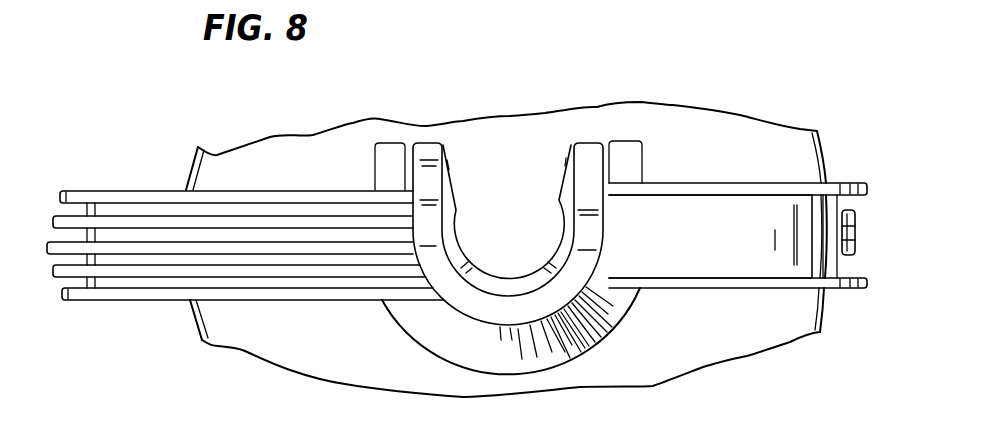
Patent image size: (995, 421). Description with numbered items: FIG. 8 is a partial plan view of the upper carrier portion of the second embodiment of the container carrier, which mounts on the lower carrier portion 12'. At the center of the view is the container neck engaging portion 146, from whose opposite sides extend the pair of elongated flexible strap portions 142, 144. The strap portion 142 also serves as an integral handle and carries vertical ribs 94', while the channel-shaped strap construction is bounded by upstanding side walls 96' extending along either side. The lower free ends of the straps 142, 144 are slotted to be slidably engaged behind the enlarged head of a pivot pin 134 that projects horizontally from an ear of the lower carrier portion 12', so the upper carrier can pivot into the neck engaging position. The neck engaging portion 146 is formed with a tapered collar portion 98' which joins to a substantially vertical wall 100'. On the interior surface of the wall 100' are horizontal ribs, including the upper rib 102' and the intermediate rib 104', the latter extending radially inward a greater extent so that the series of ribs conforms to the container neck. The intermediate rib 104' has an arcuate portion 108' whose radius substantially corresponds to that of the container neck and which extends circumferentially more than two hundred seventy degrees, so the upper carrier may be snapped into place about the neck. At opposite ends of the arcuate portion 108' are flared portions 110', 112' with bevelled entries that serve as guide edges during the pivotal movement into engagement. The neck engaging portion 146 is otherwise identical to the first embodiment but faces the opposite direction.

The lower carrier portion 12' is at (487, 249).
The vertical ribs 94' is at (231, 264).
The upstanding side walls 96' is at (738, 239).
The tapered collar portion 98' is at (526, 331).
The vertical wall 100' is at (529, 323).
The upper rib 102' is at (533, 217).
The intermediate rib 104' is at (507, 212).
The arcuate portion 108' is at (508, 253).
The flared portion 110' is at (476, 164).
The flared portion 112' is at (538, 144).
The pivot pin 134 is at (857, 233).
The strap portion 142 is at (146, 187).
The strap portion 144 is at (711, 177).
The container neck engaging portion 146 is at (397, 348).